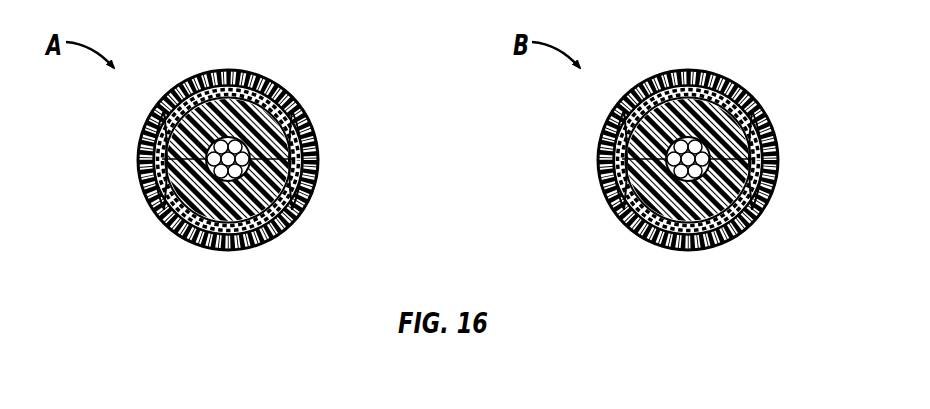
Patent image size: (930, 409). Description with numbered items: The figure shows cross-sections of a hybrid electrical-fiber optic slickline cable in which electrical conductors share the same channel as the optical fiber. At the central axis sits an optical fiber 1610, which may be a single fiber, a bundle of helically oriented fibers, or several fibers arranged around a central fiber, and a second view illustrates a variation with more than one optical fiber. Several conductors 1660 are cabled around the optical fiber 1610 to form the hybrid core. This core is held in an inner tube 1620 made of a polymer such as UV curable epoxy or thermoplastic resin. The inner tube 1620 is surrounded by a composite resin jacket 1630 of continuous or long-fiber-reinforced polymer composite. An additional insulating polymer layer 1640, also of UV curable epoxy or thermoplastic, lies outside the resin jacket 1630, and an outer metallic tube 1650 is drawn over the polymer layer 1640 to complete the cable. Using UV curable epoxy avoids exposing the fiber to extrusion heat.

The optical fiber 1610 is at (504, 150).
The inner tube 1620 is at (458, 160).
The composite resin jacket 1630 is at (264, 224).
The polymer layer 1640 is at (263, 88).
The outer metallic tube 1650 is at (235, 64).
The conductors 1660 is at (284, 112).